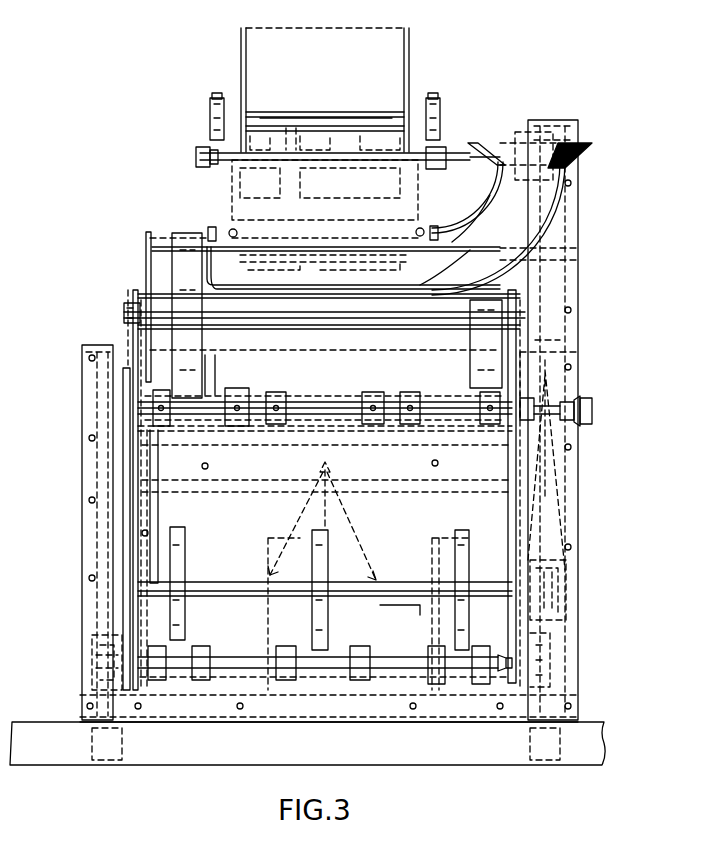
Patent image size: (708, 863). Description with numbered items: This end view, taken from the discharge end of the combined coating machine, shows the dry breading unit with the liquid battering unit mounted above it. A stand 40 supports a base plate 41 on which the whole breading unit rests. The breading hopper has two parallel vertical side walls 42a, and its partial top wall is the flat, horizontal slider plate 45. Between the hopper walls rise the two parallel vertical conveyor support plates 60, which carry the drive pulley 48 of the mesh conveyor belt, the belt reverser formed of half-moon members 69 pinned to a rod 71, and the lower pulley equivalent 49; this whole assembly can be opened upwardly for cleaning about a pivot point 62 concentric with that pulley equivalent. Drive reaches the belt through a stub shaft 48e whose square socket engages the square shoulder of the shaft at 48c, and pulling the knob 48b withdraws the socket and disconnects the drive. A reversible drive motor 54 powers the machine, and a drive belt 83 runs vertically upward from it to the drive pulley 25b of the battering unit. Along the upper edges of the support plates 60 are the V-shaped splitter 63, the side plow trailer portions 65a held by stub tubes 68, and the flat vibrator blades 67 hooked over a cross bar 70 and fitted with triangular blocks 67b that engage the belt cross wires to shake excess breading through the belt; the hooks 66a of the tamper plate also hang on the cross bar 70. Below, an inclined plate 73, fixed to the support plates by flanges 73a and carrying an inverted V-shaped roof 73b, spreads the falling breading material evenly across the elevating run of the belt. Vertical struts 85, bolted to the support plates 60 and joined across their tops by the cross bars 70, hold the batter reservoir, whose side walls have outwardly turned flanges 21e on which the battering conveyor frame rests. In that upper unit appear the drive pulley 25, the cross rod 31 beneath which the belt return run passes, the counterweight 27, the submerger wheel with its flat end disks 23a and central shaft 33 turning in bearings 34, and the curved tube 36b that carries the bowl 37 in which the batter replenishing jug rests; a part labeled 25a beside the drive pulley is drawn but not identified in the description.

The flat end disks 23a is at (428, 58).
The bearings 34 is at (210, 112).
The drive pulley 25 is at (292, 122).
The central shaft 33 is at (333, 113).
The bowl 37 is at (500, 148).
The inclined feed plate 25a is at (490, 153).
The outwardly turned flange 21e is at (440, 189).
The drive pulley 25b is at (572, 181).
The hooks 66a is at (210, 228).
The cross bar 70 is at (163, 237).
The curved tube 36b is at (480, 210).
The vertical rigid struts 85 is at (146, 242).
The drive belt 83 is at (580, 248).
The vibrator blades 67 is at (172, 262).
The stub tube 68 is at (155, 312).
The conveyor support plates 60 is at (132, 330).
The cross rod 31 is at (252, 234).
The counterweight 27 is at (322, 240).
The vertical side walls 42a is at (598, 361).
The square shoulder 48c is at (530, 408).
The triangular block 67b is at (196, 375).
The trailer portion 65a is at (412, 392).
The splitter 63 is at (303, 368).
The slider plate 45 is at (352, 394).
The drive pulley 48 is at (283, 426).
The knob 48b is at (586, 422).
The stub shaft 48e is at (588, 426).
The flanges 73a is at (147, 463).
The inclined plate 73 is at (245, 522).
The inverted V-shape roof 73b is at (328, 521).
The half-moon shape members 69 is at (188, 566).
The rod 71 is at (247, 588).
The drive motor 54 is at (401, 634).
The pulley equivalent 49 is at (281, 650).
The pivot point 62 is at (108, 634).
The base plate 41 is at (302, 722).
The stand 40 is at (470, 760).